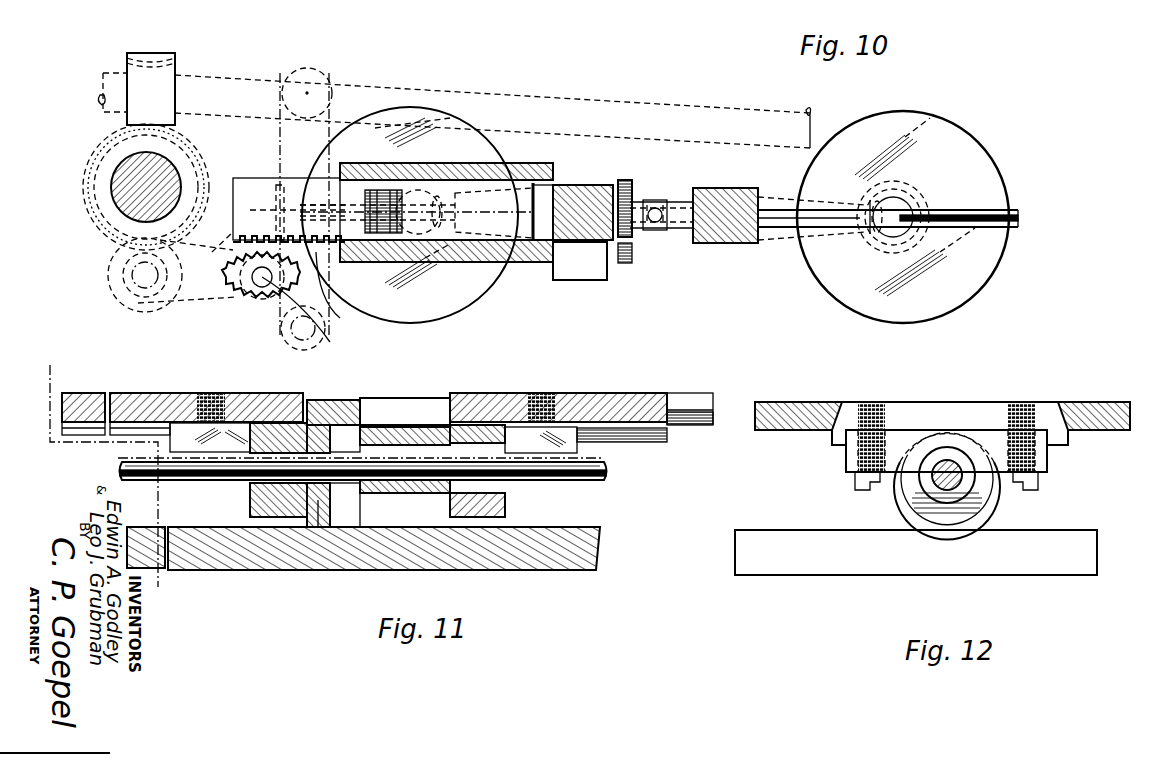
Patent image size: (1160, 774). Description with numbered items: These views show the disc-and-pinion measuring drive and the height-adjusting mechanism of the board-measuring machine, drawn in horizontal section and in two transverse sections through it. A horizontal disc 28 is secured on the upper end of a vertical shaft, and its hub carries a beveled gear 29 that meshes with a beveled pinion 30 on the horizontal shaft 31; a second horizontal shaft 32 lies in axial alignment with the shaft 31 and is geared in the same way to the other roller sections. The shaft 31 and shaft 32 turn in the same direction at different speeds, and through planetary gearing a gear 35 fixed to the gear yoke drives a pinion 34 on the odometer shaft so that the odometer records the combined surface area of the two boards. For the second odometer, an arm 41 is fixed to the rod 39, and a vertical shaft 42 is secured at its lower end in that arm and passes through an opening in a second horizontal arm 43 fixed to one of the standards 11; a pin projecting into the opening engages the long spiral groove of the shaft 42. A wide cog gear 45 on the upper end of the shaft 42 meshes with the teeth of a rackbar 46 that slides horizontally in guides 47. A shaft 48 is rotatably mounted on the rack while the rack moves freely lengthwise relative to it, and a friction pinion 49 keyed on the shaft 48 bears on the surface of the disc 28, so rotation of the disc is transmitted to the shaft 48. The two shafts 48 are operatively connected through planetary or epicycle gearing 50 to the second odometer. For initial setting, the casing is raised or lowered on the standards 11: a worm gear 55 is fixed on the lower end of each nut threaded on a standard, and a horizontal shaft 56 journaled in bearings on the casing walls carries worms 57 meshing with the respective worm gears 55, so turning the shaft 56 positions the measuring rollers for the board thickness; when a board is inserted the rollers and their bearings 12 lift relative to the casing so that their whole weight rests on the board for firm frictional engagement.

In FIG. 10, the standards 11 is at (170, 185).
In FIG. 10, the bearings 12 is at (50, 360).
In FIG. 11, the bearings 12 is at (109, 487).
In FIG. 10, the horizontal disc 28 is at (410, 106).
In FIG. 11, the horizontal disc 28 is at (552, 527).
In FIG. 12, the horizontal disc 28 is at (760, 530).
In FIG. 10, the beveled gear 29 is at (430, 188).
In FIG. 10, the beveled pinion 30 is at (440, 197).
In FIG. 10, the horizontal shaft 31 is at (560, 184).
In FIG. 10, the second horizontal shaft 32 is at (763, 208).
In FIG. 10, the pinion 34 is at (624, 264).
In FIG. 10, the gear 35 is at (632, 240).
In FIG. 10, the rod 39 is at (318, 82).
In FIG. 10, the arm 41 is at (258, 322).
In FIG. 10, the vertical shaft 42 is at (309, 313).
In FIG. 10, the second horizontal arm 43 is at (236, 228).
In FIG. 10, the wide cog gear 45 is at (262, 240).
In FIG. 10, the rackbar 46 is at (283, 197).
In FIG. 11, the rackbar 46 is at (208, 395).
In FIG. 12, the rackbar 46 is at (868, 401).
In FIG. 10, the guides 47 is at (366, 163).
In FIG. 11, the guides 47 is at (215, 425).
In FIG. 12, the guides 47 is at (808, 432).
In FIG. 10, the shaft 48 is at (701, 247).
In FIG. 11, the shaft 48 is at (608, 468).
In FIG. 12, the shaft 48 is at (935, 470).
In FIG. 10, the friction pinion 49 is at (335, 288).
In FIG. 11, the friction pinion 49 is at (318, 530).
In FIG. 12, the friction pinion 49 is at (915, 515).
In FIG. 10, the planetary or epicycle gearing 50 is at (658, 200).
In FIG. 10, the worm gear 55 is at (195, 140).
In FIG. 10, the horizontal shaft 56 is at (374, 87).
In FIG. 10, the worms 57 is at (100, 132).